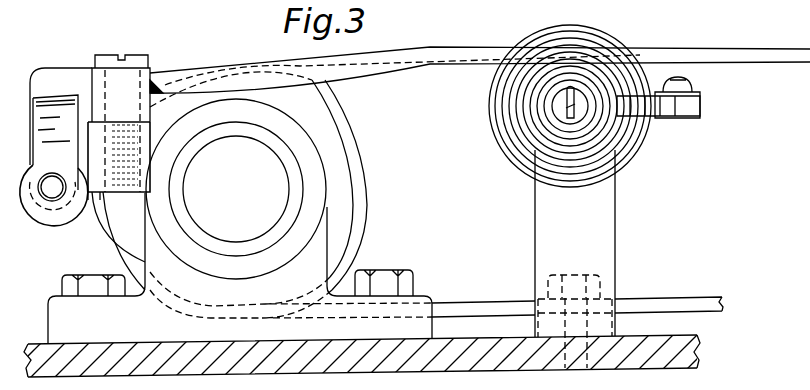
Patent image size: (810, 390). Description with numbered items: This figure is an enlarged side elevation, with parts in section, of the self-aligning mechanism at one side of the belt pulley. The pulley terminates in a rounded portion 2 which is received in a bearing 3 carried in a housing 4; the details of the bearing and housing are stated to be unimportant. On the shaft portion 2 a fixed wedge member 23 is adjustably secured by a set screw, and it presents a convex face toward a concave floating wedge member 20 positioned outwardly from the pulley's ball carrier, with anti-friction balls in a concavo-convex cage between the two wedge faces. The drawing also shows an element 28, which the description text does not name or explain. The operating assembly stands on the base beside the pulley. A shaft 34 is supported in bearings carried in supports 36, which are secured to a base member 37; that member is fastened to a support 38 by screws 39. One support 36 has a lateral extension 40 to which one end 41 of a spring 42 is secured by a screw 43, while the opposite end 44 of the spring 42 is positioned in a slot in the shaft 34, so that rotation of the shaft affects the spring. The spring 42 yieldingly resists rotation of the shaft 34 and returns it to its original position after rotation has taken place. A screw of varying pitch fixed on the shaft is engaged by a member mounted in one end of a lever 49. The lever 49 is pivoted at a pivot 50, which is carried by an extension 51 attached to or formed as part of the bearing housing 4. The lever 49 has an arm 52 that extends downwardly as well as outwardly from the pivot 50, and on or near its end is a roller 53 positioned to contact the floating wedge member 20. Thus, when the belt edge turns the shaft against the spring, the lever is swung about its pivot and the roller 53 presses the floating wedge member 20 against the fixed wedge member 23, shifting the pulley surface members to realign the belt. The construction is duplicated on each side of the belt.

The rounded portion 2 is at (268, 170).
The bearing 3 is at (297, 177).
The housing 4 is at (317, 188).
The floating wedge member 20 is at (355, 247).
The fixed wedge member 23 is at (345, 205).
The rod 28 is at (727, 55).
The shaft 34 is at (585, 117).
The support 36 is at (605, 229).
The base member 37 is at (607, 322).
The support 38 is at (697, 352).
The screw 39 is at (600, 272).
The lateral extension 40 is at (700, 108).
The end of spring 41 is at (700, 97).
The spring 42 is at (617, 48).
The screw 43 is at (690, 84).
The opposite end of spring 44 is at (560, 114).
The lever 49 is at (462, 46).
The pivot 50 is at (137, 53).
The extension 51 is at (104, 200).
The arm 52 is at (48, 97).
The roller 53 is at (52, 220).